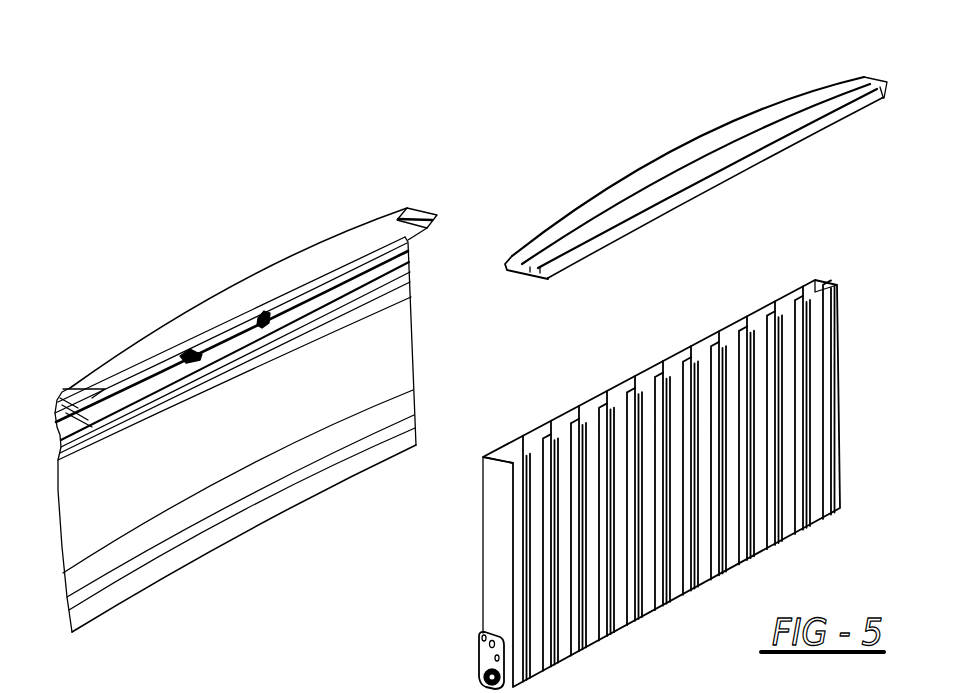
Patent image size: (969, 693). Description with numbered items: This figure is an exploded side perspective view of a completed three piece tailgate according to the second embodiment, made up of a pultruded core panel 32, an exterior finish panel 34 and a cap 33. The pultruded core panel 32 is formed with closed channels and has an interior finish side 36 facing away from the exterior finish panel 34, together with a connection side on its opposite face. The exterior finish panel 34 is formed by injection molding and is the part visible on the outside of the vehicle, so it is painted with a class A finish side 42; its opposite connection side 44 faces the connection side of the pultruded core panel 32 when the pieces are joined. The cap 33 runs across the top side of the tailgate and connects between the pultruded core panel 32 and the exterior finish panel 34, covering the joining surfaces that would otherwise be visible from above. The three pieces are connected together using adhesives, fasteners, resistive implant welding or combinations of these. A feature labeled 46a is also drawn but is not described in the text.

The pultruded core panel 32 is at (818, 238).
The cap 33 is at (849, 80).
The exterior finish panel 34 is at (45, 379).
The interior finish side 36 is at (786, 377).
The class A finish side 42 is at (217, 260).
The connection side 44 is at (343, 369).
The hinge bracket 46a is at (393, 662).